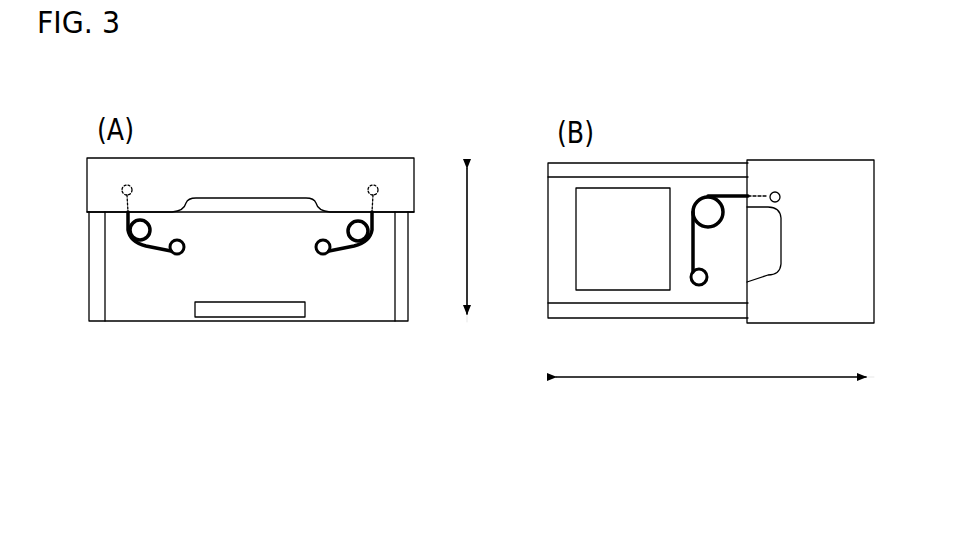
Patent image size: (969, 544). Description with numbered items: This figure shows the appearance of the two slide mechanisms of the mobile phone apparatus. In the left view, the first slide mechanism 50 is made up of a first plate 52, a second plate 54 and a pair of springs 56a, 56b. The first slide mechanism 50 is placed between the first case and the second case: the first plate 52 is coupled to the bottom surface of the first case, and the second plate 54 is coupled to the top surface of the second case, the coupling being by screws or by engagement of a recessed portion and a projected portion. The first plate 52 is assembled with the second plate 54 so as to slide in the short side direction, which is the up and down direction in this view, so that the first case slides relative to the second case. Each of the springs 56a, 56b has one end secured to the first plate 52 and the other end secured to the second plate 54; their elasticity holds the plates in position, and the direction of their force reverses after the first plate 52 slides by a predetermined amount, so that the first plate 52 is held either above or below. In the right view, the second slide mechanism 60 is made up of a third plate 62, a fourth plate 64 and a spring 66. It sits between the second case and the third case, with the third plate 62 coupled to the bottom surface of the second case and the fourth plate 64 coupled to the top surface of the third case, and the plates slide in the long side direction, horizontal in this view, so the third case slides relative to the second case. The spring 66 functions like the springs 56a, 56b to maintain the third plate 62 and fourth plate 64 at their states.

The first slide mechanism 50 is at (275, 239).
The first plate 52 is at (416, 168).
The second plate 54 is at (152, 322).
The spring 56a is at (161, 251).
The spring 56b is at (336, 252).
The second slide mechanism 60 is at (735, 239).
The third plate 62 is at (876, 219).
The fourth plate 64 is at (648, 319).
The spring 66 is at (691, 219).